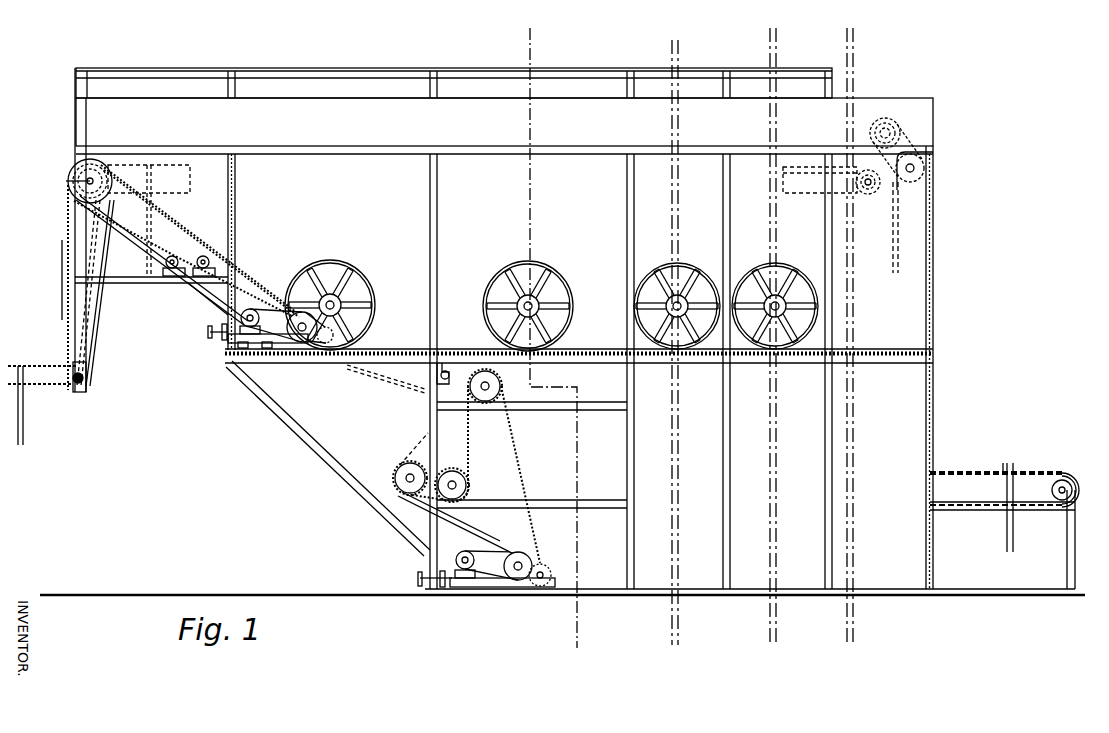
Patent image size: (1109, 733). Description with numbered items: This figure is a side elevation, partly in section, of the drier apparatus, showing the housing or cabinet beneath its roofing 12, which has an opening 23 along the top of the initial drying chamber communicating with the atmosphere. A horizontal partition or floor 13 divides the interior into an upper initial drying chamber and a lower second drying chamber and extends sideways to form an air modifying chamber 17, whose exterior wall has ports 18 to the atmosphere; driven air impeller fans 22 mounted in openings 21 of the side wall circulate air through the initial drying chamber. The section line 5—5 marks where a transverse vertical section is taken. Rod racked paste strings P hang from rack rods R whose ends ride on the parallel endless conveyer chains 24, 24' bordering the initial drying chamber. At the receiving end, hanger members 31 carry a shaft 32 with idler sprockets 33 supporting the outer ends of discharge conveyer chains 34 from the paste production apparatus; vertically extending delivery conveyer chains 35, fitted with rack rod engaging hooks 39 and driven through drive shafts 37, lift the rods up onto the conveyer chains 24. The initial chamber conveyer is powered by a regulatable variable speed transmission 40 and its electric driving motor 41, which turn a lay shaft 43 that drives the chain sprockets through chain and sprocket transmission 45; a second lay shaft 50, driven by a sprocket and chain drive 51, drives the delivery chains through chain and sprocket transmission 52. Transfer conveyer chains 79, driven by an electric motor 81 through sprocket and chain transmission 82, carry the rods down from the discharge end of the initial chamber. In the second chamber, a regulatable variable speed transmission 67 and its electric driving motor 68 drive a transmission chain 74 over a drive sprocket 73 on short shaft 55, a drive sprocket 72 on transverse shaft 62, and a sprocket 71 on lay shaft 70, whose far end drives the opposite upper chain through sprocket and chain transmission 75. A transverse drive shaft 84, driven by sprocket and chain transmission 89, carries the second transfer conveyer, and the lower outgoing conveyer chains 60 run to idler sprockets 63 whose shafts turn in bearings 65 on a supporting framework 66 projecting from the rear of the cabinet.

The section line 5— 5 is at (513, 25).
The roofing 12 is at (504, 126).
The horizontal partition or floor 13 is at (597, 349).
The air modifying chamber 17 is at (580, 367).
The ports 18 is at (418, 68).
The openings 21 is at (330, 262).
The driven air impeller fans 22 is at (358, 285).
The opening 23 is at (345, 76).
The endless conveyer chains 24 is at (151, 179).
The drive housing 24' is at (820, 180).
The hanger members 31 is at (92, 346).
The shaft 32 is at (90, 382).
The idler sprockets 33 is at (72, 392).
The endless conveyer chains 34 is at (46, 361).
The vertically extending chains 35 is at (66, 219).
The drive shafts 37 is at (66, 181).
The rack rod engaging and carrying hooks 39 is at (66, 258).
The regulatable variable speed transmission 40 is at (352, 330).
The electric driving motor 41 is at (254, 284).
The lay shaft 43 is at (205, 255).
The chain and sprocket transmission 45 is at (194, 238).
The second lay shaft 50 is at (166, 268).
The sprocket and chain drive 51 is at (196, 290).
The chain and sprocket transmission 52 is at (147, 262).
The short shafts 55 is at (482, 398).
The endless conveyer chains 60 is at (996, 472).
The transverse shaft 62 is at (468, 486).
The idler sprockets 63 is at (1054, 478).
The bearings 65 is at (1048, 490).
The supporting framework 66 is at (1052, 512).
The regulatable variable speed transmission 67 is at (540, 562).
The electric driving motor 68 is at (462, 552).
The lay shaft 70 is at (396, 472).
The sprocket 71 is at (396, 516).
The drive sprocket 72 is at (450, 468).
The drive sprocket 73 is at (500, 402).
The transmission chain 74 is at (522, 455).
The sprocket and chain transmission 75 is at (420, 445).
The transfer conveyer chains 79 is at (893, 235).
The electric motor 81 is at (898, 130).
The sprocket and chain transmission 82 is at (910, 153).
The transverse drive shaft 84 is at (452, 349).
The sprocket and chain transmission 89 is at (368, 372).
The paste strings P is at (58, 296).
The rack rods R is at (58, 243).